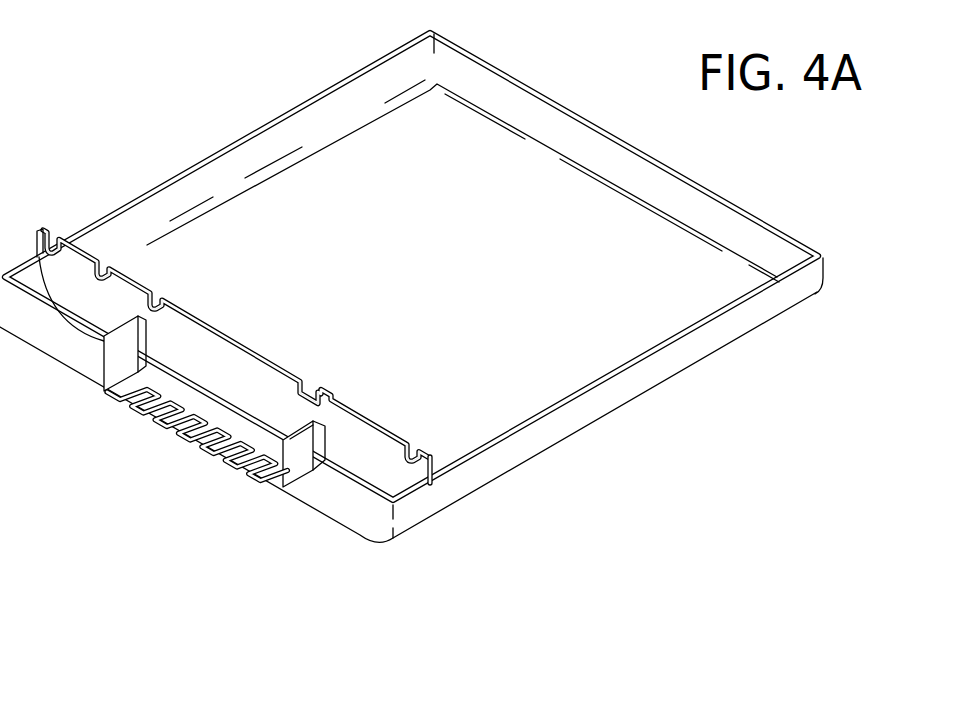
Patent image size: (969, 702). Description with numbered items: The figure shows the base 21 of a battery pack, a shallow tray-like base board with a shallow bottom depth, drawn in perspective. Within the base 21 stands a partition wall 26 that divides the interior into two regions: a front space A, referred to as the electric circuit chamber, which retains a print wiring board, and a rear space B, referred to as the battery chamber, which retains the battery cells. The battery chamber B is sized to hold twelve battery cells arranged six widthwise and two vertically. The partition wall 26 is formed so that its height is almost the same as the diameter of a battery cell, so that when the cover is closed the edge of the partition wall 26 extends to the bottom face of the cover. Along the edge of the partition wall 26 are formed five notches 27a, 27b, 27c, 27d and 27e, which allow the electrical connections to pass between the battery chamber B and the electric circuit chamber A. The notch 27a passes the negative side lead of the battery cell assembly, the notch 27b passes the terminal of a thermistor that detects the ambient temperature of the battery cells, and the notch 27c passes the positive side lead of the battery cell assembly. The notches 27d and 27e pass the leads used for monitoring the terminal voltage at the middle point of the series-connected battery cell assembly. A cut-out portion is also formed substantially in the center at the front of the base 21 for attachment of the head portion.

The base 21 is at (672, 433).
The partition wall 26 is at (236, 340).
The notch 27a is at (417, 445).
The notch 27b is at (313, 385).
The notch 27c is at (163, 296).
The notch 27d is at (103, 258).
The notch 27e is at (52, 234).
The front space A is at (186, 401).
The rear space B is at (510, 130).